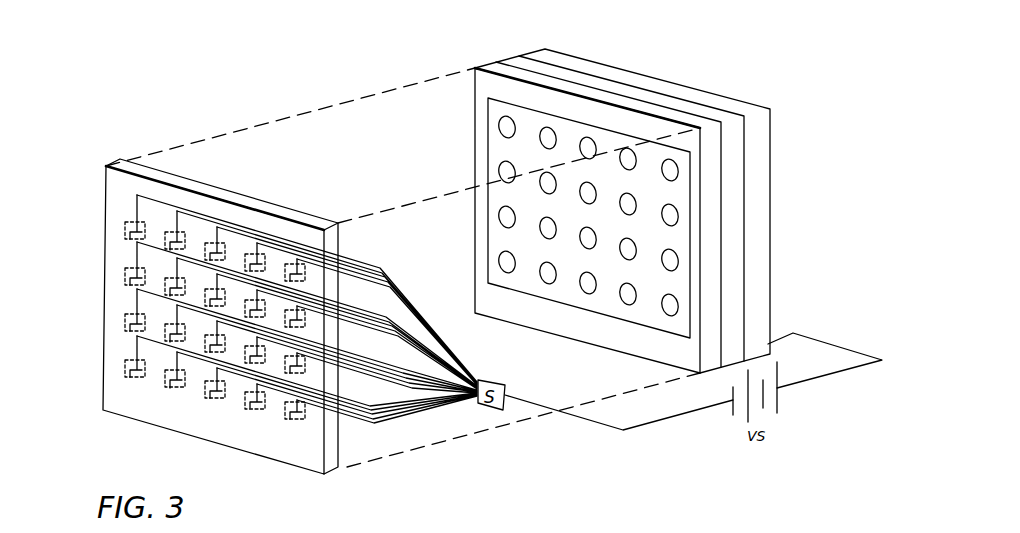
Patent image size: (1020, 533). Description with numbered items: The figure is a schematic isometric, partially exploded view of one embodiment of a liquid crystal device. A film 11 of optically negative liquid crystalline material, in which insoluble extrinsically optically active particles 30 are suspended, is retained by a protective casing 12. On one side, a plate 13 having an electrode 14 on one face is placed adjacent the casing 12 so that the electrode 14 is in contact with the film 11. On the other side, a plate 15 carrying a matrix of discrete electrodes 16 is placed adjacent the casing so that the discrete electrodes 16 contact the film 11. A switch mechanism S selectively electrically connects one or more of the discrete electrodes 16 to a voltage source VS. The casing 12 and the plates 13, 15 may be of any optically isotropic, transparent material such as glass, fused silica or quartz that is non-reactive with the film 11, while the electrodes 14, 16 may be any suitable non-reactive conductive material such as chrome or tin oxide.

The film 11 is at (498, 108).
The protective casing 12 is at (488, 66).
The plate 13 is at (534, 52).
The electrode 14 is at (518, 60).
The plate 15 is at (341, 238).
The discrete electrodes 16 is at (305, 418).
The extrinsically optically active particles 30 is at (498, 137).